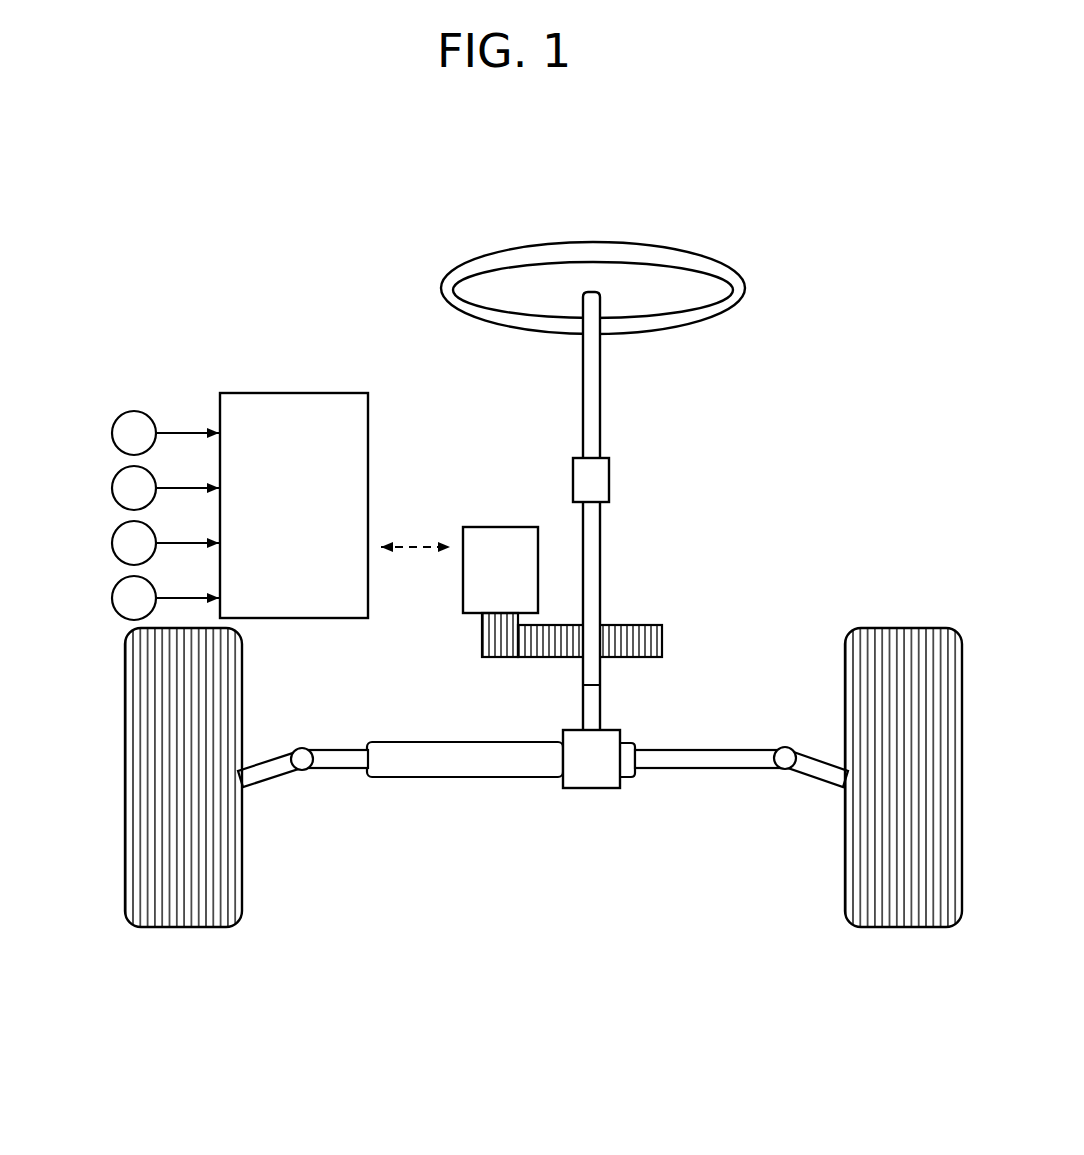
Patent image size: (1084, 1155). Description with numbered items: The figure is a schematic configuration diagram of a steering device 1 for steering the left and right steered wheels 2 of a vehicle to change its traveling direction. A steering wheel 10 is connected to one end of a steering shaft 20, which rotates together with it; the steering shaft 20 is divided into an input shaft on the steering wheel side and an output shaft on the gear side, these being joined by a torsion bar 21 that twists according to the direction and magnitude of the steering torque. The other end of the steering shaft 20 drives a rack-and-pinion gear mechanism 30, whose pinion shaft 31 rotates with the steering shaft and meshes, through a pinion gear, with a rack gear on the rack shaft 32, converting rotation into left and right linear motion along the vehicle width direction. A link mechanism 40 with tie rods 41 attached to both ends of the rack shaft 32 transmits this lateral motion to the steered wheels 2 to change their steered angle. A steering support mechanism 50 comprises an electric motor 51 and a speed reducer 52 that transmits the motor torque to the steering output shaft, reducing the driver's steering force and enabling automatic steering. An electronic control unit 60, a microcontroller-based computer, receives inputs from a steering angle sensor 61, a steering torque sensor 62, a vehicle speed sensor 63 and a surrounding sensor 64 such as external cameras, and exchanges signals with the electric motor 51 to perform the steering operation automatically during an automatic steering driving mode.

The steering device 1 is at (218, 1037).
The steered wheels 2 is at (178, 927).
The steering wheel 10 is at (690, 248).
The steering shaft 20 is at (600, 408).
The torsion bar 21 is at (609, 485).
The rack-and-pinion gear mechanism 30 is at (516, 851).
The pinion shaft 31 is at (600, 712).
The rack shaft 32 is at (343, 768).
The link mechanism 40 is at (275, 799).
The tie rods 41 is at (268, 752).
The steering support mechanism 50 is at (488, 500).
The electric motor 51 is at (460, 577).
The speed reducer 52 is at (548, 657).
The electronic control unit 60 is at (368, 418).
The steering angle sensor 61 is at (112, 435).
The steering torque sensor 62 is at (112, 490).
The vehicle speed sensor 63 is at (112, 545).
The surrounding sensor 64 is at (112, 600).